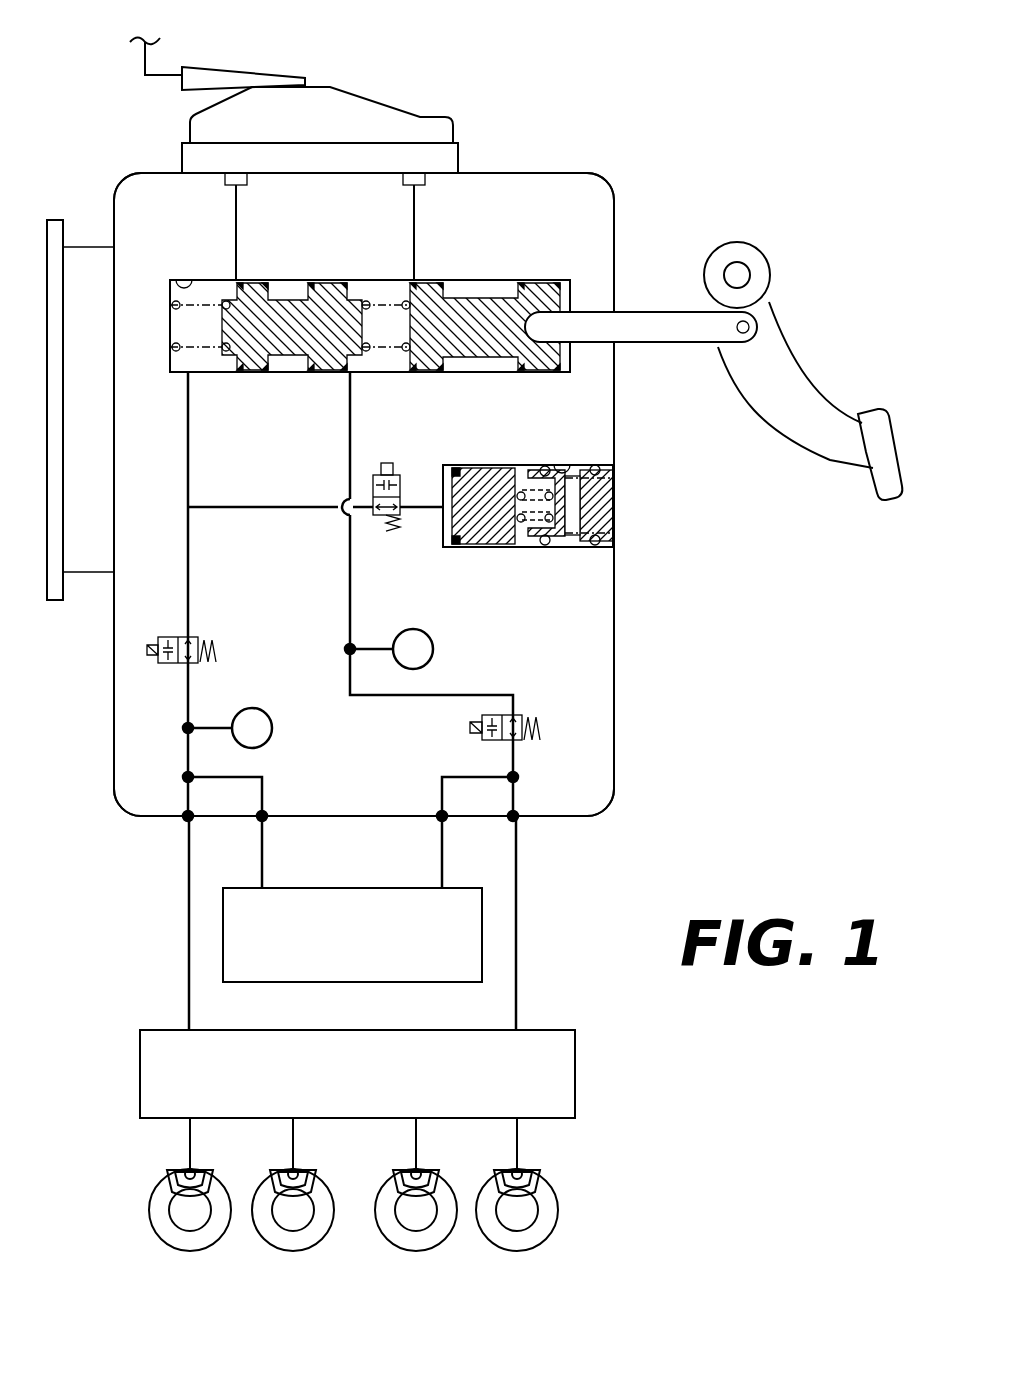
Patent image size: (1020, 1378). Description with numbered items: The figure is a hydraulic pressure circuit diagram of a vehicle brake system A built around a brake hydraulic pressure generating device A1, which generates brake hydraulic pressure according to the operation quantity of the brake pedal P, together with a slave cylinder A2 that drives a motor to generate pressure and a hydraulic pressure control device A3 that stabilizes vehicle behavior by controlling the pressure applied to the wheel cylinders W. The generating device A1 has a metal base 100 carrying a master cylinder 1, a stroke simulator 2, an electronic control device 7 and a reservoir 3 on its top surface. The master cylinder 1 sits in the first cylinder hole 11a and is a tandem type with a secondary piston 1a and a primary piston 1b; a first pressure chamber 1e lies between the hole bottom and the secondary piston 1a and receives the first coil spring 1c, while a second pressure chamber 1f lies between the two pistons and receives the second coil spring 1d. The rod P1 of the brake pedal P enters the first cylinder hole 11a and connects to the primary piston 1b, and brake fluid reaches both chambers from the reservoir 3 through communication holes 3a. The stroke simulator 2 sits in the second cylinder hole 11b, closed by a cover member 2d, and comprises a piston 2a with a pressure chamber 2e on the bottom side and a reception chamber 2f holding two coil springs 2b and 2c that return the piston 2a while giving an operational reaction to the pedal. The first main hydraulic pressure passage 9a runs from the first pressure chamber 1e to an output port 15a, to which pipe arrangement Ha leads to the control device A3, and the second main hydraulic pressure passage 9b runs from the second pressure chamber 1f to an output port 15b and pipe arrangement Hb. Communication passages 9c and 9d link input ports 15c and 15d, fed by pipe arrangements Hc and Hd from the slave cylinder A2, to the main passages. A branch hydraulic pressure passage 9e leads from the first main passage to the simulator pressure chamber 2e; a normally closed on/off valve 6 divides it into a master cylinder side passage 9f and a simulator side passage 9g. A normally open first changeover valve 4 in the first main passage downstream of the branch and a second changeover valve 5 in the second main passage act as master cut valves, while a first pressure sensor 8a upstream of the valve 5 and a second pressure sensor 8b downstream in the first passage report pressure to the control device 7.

The base 100 is at (622, 204).
The vehicle brake system A is at (562, 150).
The brake hydraulic pressure generating device A1 is at (616, 712).
The slave cylinder A2 is at (371, 950).
The hydraulic pressure control device A3 is at (376, 1090).
The master cylinder 1 is at (344, 318).
The secondary piston 1a is at (291, 332).
The primary piston 1b is at (482, 330).
The first coil spring 1c is at (216, 374).
The second coil spring 1d is at (392, 374).
The first pressure chamber 1e is at (213, 336).
The second pressure chamber 1f is at (390, 336).
The first cylinder hole 11a is at (174, 283).
The second cylinder hole 11b is at (562, 464).
The stroke simulator 2 is at (550, 496).
The piston 2a is at (490, 530).
The coil spring 2b is at (527, 548).
The coil spring 2c is at (580, 548).
The cover member 2d is at (600, 498).
The pressure chamber 2e is at (446, 522).
The reception chamber 2f is at (597, 520).
The reservoir 3 is at (367, 90).
The communication hole 3a is at (232, 192).
The first changeover valve 4 is at (200, 665).
The second changeover valve 5 is at (524, 740).
The on/off valve 6 is at (373, 516).
The electronic control device 7 is at (87, 552).
The first pressure sensor 8a is at (389, 649).
The second pressure sensor 8b is at (227, 728).
The first main hydraulic pressure passage 9a is at (190, 567).
The second main hydraulic pressure passage 9b is at (348, 604).
The communication hydraulic pressure passage 9c is at (246, 778).
The communication hydraulic pressure passage 9d is at (458, 778).
The branch hydraulic pressure passage 9e is at (334, 471).
The master cylinder side hydraulic pressure passage 9f is at (256, 505).
The simulator side hydraulic pressure passage 9g is at (415, 505).
The output port 15a is at (187, 814).
The output port 15b is at (516, 814).
The input port 15c is at (265, 814).
The input port 15d is at (440, 814).
The pipe arrangement Ha is at (188, 852).
The pipe arrangement Hb is at (517, 852).
The pipe arrangement Hc is at (265, 852).
The pipe arrangement Hd is at (440, 852).
The brake pedal P is at (873, 482).
The rod P1 is at (660, 318).
The wheel cylinder W is at (205, 1178).